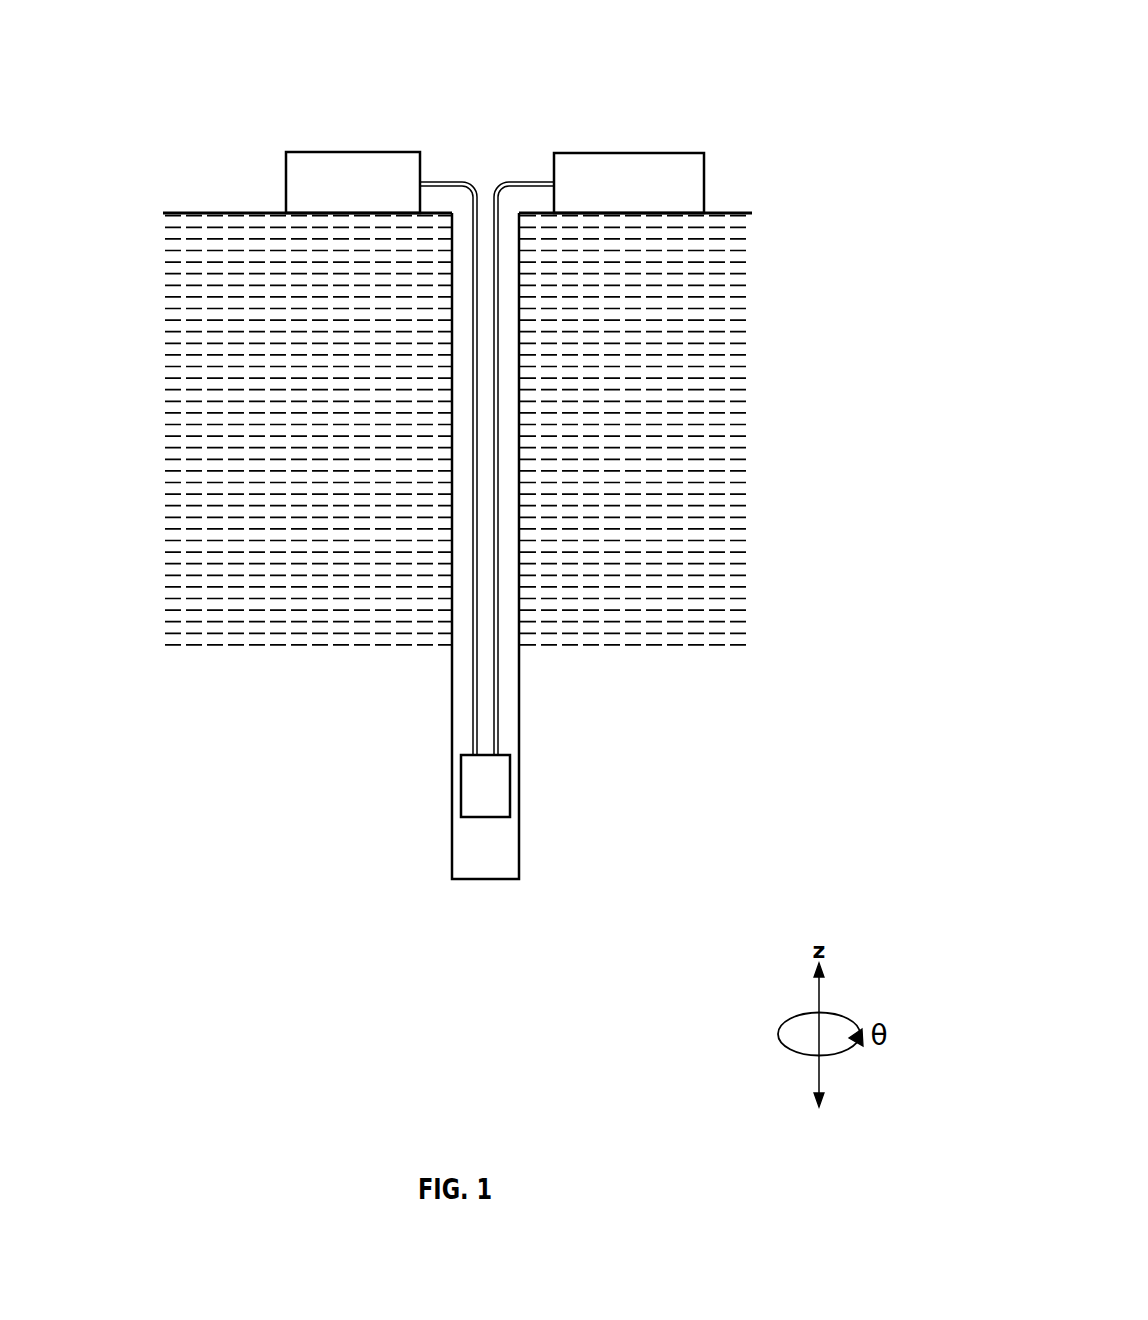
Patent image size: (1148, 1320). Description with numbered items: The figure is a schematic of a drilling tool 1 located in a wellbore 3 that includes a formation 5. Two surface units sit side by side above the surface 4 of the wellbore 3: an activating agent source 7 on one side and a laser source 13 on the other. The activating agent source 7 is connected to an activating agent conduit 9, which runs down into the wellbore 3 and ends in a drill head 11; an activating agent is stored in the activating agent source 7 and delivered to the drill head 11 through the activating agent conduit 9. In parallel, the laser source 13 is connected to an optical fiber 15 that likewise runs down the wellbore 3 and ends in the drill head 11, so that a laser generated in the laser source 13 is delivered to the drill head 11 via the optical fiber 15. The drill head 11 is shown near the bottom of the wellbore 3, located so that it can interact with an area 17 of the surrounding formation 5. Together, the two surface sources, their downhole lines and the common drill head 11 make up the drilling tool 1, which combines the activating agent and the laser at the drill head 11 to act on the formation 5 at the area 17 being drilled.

The drilling tool 1 is at (783, 65).
The wellbore 3 is at (450, 307).
The surface 4 is at (195, 273).
The formation 5 is at (287, 863).
The activating agent source 7 is at (305, 152).
The activating agent conduit 9 is at (473, 692).
The drill head 11 is at (465, 779).
The laser source 13 is at (677, 152).
The optical fiber 15 is at (497, 651).
The area 17 is at (519, 784).